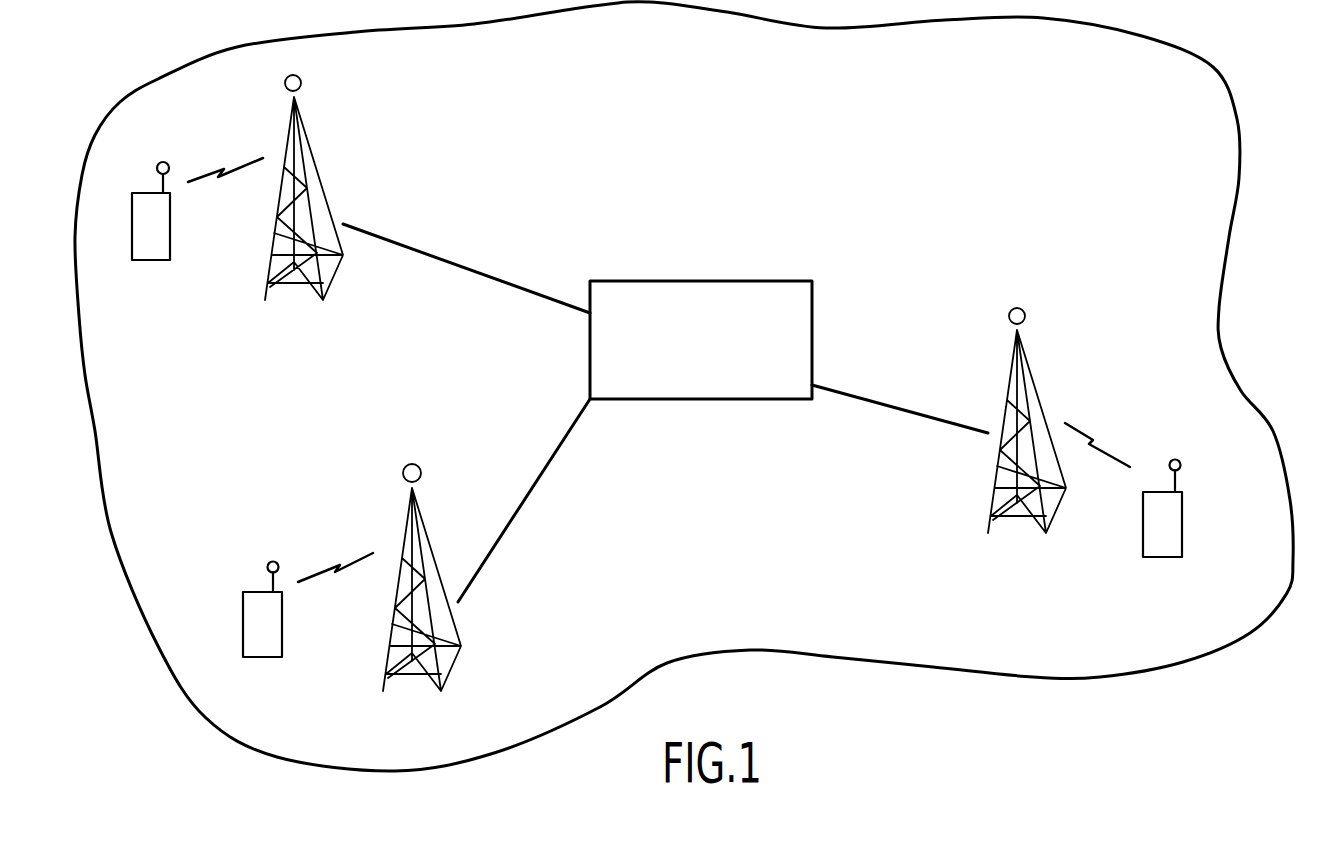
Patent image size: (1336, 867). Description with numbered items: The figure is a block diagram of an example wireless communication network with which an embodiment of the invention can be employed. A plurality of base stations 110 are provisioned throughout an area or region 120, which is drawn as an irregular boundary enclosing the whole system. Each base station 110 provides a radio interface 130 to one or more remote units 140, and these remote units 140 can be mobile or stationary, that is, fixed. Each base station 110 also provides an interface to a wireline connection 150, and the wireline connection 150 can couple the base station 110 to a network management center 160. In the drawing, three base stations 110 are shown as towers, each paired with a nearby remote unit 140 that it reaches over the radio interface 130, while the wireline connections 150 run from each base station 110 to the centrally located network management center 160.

The base station 110 is at (328, 207).
The area or region 120 is at (1263, 628).
The radio interface 130 is at (225, 177).
The remote unit 140 is at (172, 257).
The wireline connection 150 is at (468, 267).
The network management center 160 is at (687, 400).